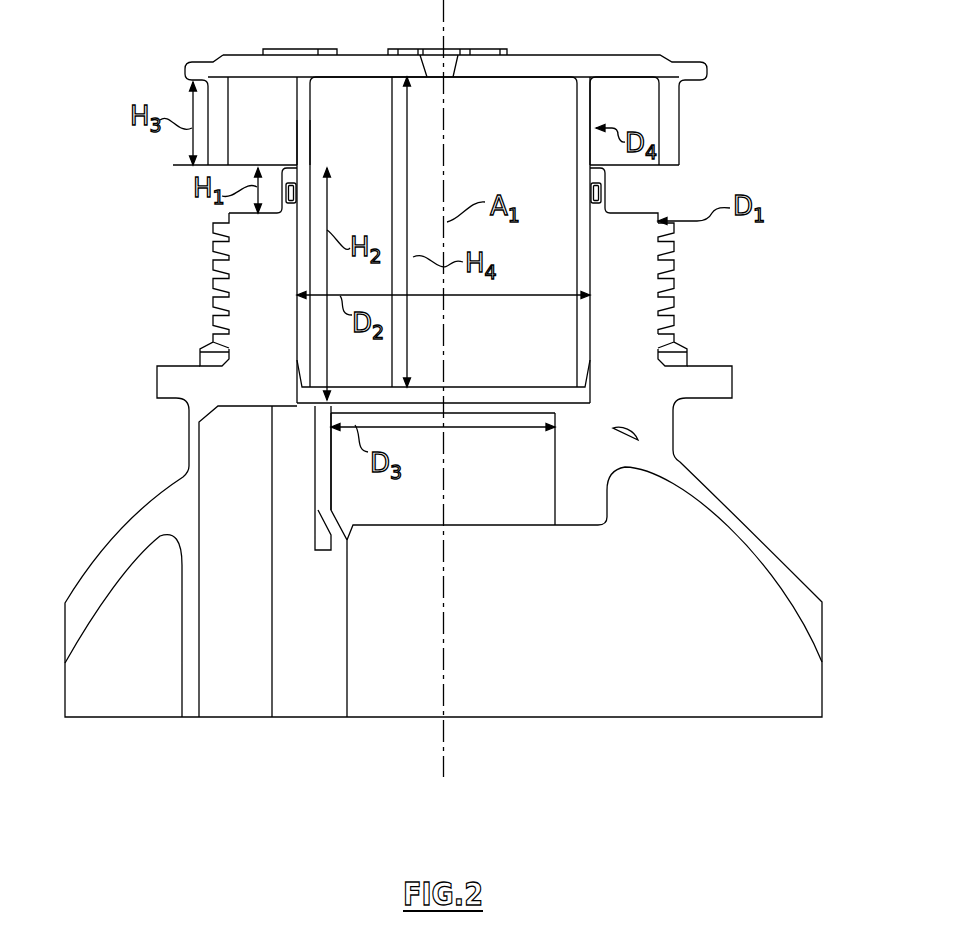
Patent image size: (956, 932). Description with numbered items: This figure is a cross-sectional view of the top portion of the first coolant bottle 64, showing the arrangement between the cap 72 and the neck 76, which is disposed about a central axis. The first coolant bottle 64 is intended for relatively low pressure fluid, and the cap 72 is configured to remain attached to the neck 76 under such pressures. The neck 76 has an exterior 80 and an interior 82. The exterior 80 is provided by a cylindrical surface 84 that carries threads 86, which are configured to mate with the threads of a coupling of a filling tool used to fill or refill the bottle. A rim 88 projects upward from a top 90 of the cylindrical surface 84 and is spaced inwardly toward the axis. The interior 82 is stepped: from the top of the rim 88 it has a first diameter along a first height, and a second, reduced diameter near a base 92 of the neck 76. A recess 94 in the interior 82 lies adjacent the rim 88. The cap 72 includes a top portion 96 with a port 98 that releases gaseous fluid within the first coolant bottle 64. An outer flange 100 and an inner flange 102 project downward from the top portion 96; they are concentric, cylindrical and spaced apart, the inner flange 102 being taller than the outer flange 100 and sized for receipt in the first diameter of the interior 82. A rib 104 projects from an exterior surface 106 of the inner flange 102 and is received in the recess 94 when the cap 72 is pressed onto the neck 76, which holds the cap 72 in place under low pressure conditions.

The first coolant bottle 64 is at (117, 507).
The cap 72 is at (690, 56).
The neck 76 is at (203, 252).
The exterior 80 is at (677, 250).
The interior 82 is at (432, 509).
The cylindrical surface 84 is at (663, 353).
The threads 86 is at (672, 292).
The rim 88 is at (612, 197).
The top 90 is at (630, 215).
The base 92 is at (556, 410).
The recess 94 is at (292, 205).
The top portion 96 is at (528, 63).
The port 98 is at (433, 63).
The outer flange 100 is at (673, 118).
The inner flange 102 is at (585, 108).
The rib 104 is at (297, 190).
The exterior surface 106 is at (296, 130).